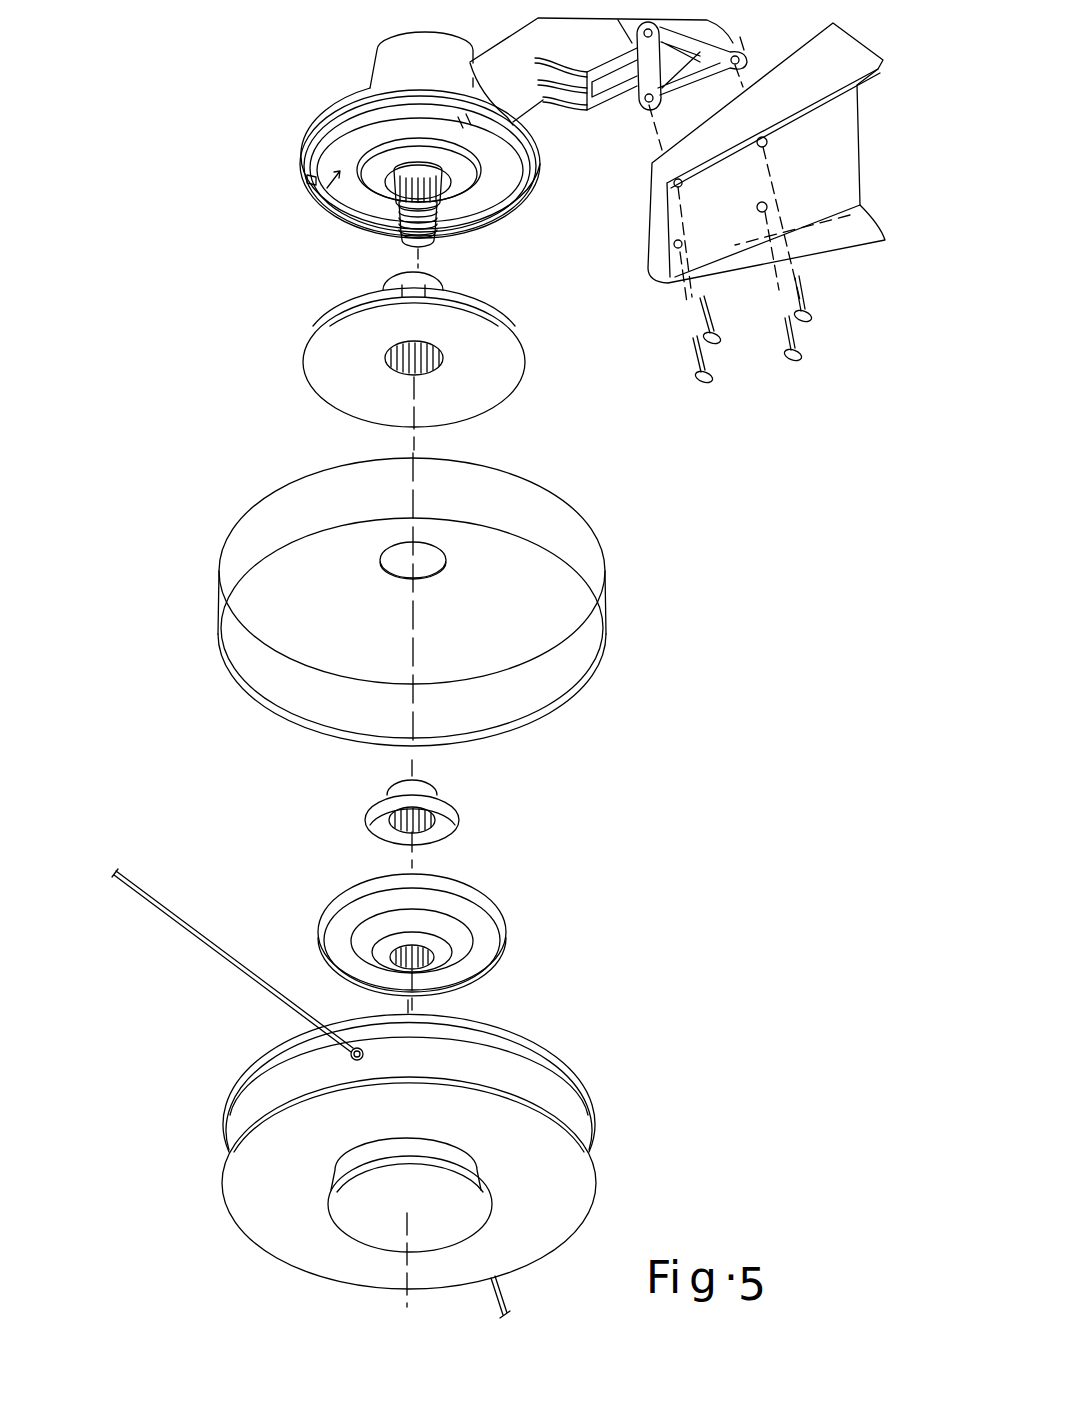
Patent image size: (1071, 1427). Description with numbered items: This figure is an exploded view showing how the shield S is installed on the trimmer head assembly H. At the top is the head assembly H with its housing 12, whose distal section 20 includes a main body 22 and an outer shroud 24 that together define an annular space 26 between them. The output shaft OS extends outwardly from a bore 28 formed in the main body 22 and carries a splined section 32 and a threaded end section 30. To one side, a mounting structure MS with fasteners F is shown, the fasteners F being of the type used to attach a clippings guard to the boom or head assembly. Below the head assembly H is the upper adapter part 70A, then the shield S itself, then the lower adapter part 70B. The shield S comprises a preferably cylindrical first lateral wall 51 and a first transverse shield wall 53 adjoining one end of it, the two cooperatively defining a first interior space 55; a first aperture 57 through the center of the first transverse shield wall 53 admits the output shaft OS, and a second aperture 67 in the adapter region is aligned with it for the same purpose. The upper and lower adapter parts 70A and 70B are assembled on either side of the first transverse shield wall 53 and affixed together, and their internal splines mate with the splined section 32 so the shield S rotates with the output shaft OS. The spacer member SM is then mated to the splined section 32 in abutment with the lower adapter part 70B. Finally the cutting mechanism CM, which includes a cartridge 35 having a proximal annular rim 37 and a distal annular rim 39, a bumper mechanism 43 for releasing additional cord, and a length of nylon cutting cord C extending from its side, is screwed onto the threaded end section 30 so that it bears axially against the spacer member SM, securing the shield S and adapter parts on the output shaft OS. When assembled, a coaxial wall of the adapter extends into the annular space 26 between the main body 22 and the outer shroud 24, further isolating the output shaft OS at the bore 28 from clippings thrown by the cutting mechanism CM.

The trimmer head assembly H is at (218, 123).
The housing 12 is at (520, 32).
The distal section 20 is at (377, 60).
The main body 22 is at (380, 150).
The outer shroud 24 is at (300, 165).
The annular space 26 is at (383, 189).
The bore 28 is at (438, 200).
The threaded end section 30 is at (400, 240).
The splined section 32 is at (398, 200).
The output shaft OS is at (437, 213).
The mounting structure MS is at (632, 96).
The fasteners F is at (800, 353).
The upper adapter part 70A is at (303, 352).
The second aperture 67 is at (393, 372).
The shield S is at (143, 531).
The first lateral wall 51 is at (218, 576).
The first transverse shield wall 53 is at (263, 598).
The first interior space 55 is at (271, 678).
The first aperture 57 is at (442, 573).
The lower adapter part 70B is at (367, 810).
The spacer member SM is at (340, 897).
The cutting cord C is at (508, 1297).
The cutting mechanism CM is at (182, 1104).
The proximal annular rim 37 is at (253, 1060).
The cartridge 35 is at (573, 1115).
The distal annular rim 39 is at (220, 1178).
The bumper mechanism 43 is at (330, 1218).